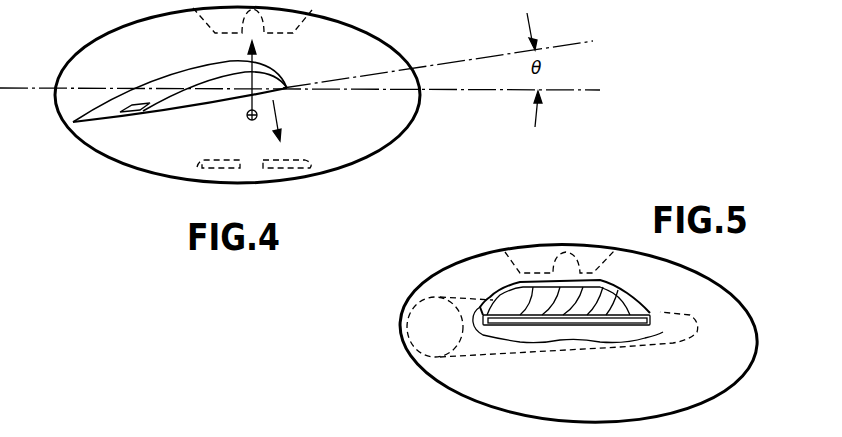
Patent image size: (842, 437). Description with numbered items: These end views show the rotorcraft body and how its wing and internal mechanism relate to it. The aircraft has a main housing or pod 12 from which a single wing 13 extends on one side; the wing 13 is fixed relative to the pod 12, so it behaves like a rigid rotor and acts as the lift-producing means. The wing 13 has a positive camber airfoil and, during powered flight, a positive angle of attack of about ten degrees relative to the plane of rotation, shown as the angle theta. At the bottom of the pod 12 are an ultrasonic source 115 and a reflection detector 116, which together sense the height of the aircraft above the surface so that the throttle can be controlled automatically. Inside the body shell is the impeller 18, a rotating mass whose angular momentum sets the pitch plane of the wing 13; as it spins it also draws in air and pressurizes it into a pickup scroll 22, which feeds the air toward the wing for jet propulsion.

In FIG. 4, the main housing or pod 12 is at (388, 124).
In FIG. 5, the main housing or pod 12 is at (733, 372).
In FIG. 4, the wing 13 is at (186, 74).
In FIG. 4, the ultrasonic source 115 is at (187, 177).
In FIG. 4, the reflection detector 116 is at (314, 170).
In FIG. 5, the impeller 18 is at (630, 313).
In FIG. 5, the pickup scroll 22 is at (697, 325).